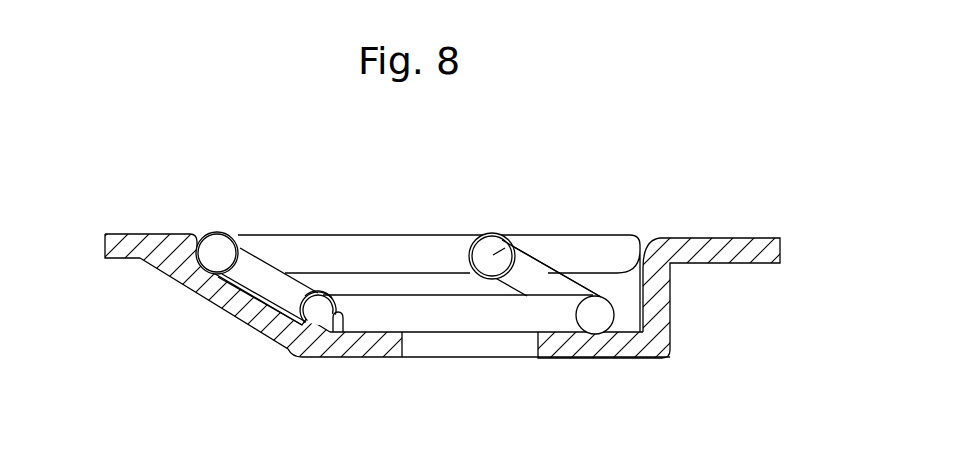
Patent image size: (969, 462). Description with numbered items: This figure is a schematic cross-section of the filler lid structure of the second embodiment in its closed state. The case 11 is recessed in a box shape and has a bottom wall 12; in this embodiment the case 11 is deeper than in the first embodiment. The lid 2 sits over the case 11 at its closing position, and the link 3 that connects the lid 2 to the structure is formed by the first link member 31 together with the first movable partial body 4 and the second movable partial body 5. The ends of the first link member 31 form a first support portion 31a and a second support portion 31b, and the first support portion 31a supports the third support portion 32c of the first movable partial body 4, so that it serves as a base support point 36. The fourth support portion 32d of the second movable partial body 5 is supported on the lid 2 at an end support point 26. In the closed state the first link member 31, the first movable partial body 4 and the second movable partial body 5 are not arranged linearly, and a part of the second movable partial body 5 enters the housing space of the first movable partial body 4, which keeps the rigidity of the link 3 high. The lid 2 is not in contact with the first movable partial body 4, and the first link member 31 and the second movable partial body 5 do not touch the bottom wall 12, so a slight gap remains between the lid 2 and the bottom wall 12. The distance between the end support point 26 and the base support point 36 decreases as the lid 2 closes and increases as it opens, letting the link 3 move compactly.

The lid 2 is at (404, 245).
The link 3 is at (378, 288).
The first movable partial body 4 is at (433, 320).
The second movable partial body 5 is at (547, 271).
The case 11 is at (153, 268).
The bottom wall 12 is at (379, 348).
The end support point 26 is at (491, 252).
The first link member 31 is at (232, 313).
The first support portion 31a is at (320, 320).
The second support portion 31b is at (214, 246).
The third support portion 32c is at (321, 292).
The fourth support portion 32d is at (517, 243).
The base support point 36 is at (343, 330).